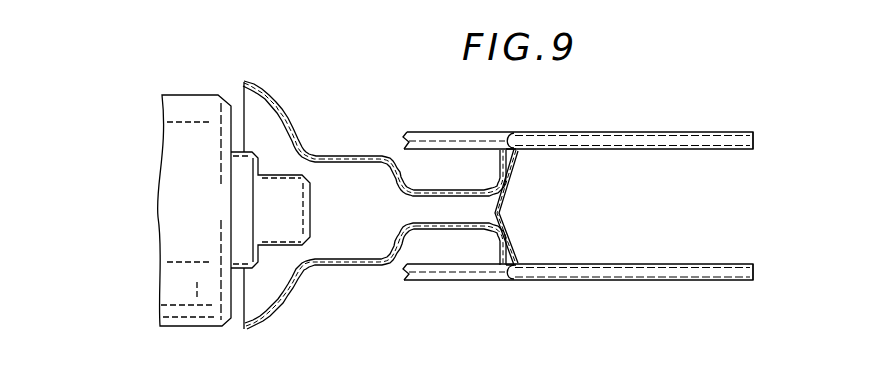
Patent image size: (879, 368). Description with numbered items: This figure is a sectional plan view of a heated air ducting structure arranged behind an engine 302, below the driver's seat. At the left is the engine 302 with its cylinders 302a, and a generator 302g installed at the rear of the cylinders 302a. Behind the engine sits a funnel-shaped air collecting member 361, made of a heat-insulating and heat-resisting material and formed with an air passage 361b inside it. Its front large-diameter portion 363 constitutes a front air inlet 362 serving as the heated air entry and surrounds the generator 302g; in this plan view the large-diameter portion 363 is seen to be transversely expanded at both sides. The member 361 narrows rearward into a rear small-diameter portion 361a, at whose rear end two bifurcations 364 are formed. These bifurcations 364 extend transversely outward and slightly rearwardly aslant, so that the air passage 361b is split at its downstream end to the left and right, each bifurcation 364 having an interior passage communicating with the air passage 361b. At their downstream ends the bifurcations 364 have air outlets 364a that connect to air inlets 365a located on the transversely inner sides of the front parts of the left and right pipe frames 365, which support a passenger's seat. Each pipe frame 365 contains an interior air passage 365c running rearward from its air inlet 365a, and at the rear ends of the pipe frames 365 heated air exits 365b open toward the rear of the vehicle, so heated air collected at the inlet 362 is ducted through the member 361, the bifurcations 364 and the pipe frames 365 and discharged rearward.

The engine 302 is at (160, 194).
The cylinders 302a is at (185, 99).
The generator 302g is at (293, 203).
The air collecting member 361 is at (358, 268).
The rear small-diameter portion 361a is at (453, 175).
The air passage 361b is at (342, 222).
The front air inlet 362 is at (263, 128).
The front large-diameter portion 363 is at (263, 84).
The bifurcations 364 is at (516, 170).
The air outlets 364a is at (507, 153).
The pipe frames 365 is at (668, 132).
The air inlets 365a is at (528, 141).
The heated air exits 365b is at (753, 145).
The interior air passages 365c is at (632, 140).